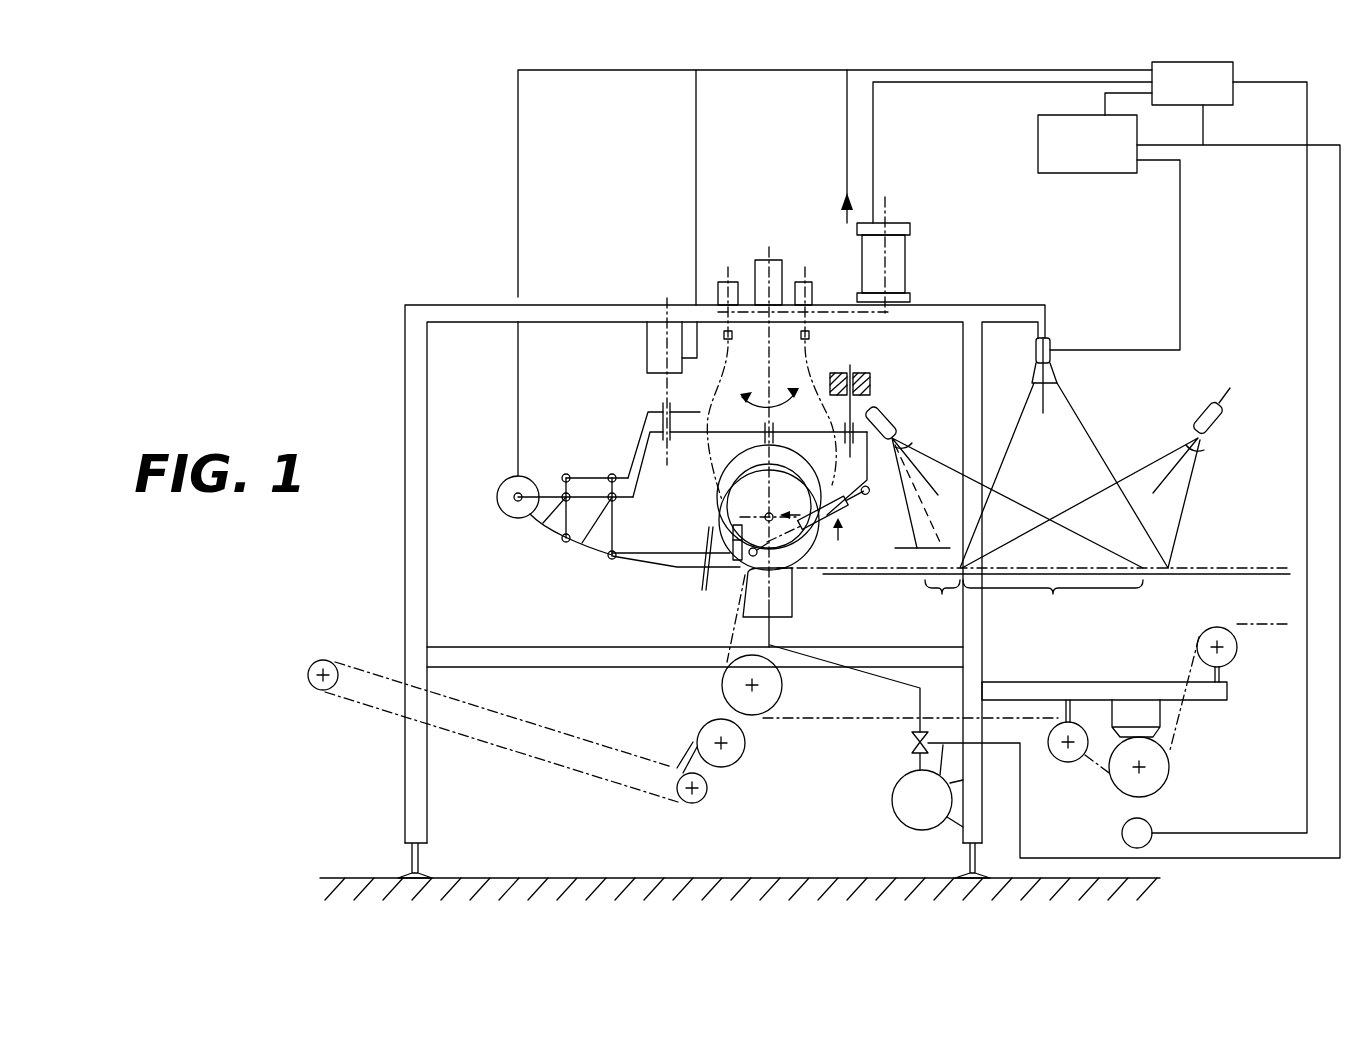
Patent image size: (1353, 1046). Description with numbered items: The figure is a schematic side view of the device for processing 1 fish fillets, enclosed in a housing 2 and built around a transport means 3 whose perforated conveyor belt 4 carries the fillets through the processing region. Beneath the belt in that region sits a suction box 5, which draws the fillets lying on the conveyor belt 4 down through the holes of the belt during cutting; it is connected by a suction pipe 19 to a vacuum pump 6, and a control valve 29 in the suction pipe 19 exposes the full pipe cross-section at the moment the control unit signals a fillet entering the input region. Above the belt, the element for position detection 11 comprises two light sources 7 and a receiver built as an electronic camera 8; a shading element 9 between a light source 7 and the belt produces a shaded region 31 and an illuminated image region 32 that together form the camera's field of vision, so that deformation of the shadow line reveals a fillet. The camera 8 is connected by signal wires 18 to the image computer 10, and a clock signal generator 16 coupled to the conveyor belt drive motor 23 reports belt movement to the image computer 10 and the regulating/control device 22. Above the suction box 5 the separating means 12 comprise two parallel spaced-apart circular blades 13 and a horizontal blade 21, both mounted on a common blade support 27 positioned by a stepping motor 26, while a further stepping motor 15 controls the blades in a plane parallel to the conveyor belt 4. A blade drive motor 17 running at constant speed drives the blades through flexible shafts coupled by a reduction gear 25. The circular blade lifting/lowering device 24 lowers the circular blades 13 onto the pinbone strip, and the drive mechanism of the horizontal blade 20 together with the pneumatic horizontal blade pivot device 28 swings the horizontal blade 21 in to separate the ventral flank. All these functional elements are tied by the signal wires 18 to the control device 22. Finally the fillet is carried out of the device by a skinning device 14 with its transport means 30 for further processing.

The device for processing 1 is at (360, 262).
The housing 2 is at (470, 306).
The transport means 3 is at (1258, 680).
The perforated conveyor belt 4 is at (1226, 568).
The suction box 5 is at (787, 600).
The vacuum pump 6 is at (900, 803).
The transmitters (light sources) 7 is at (897, 415).
The receiver (electronic camera) 8 is at (1032, 356).
The shading element 9 is at (905, 547).
The image computer 10 is at (1071, 159).
The element for position detection 11 is at (1126, 397).
The separating means 12 is at (698, 530).
The circular blades 13 is at (720, 486).
The skinning device 14 is at (648, 735).
The stepping motor 15 is at (770, 258).
The speed pick-up or clock signal generator 16 is at (1133, 830).
The blade drive motor 17 is at (900, 252).
The signal wires / control wires 18 is at (518, 190).
The suction pipe 19 is at (890, 680).
The drive mechanism of the horizontal blade 20 is at (540, 548).
The horizontal blade 21 is at (727, 581).
The regulating/control device 22 is at (1176, 97).
The conveyor belt drive motor 23 is at (1160, 773).
The circular blade lifting/lowering device 24 is at (660, 397).
The reduction gear for flexible shafts 25 is at (726, 280).
The stepping motor 26 is at (650, 345).
The common blade support 27 is at (644, 458).
The horizontal blade pivot device 28 is at (855, 502).
The control valve 29 is at (912, 741).
The transport means 30 is at (358, 660).
The shaded region 31 is at (942, 599).
The illuminated image region 32 is at (1053, 600).